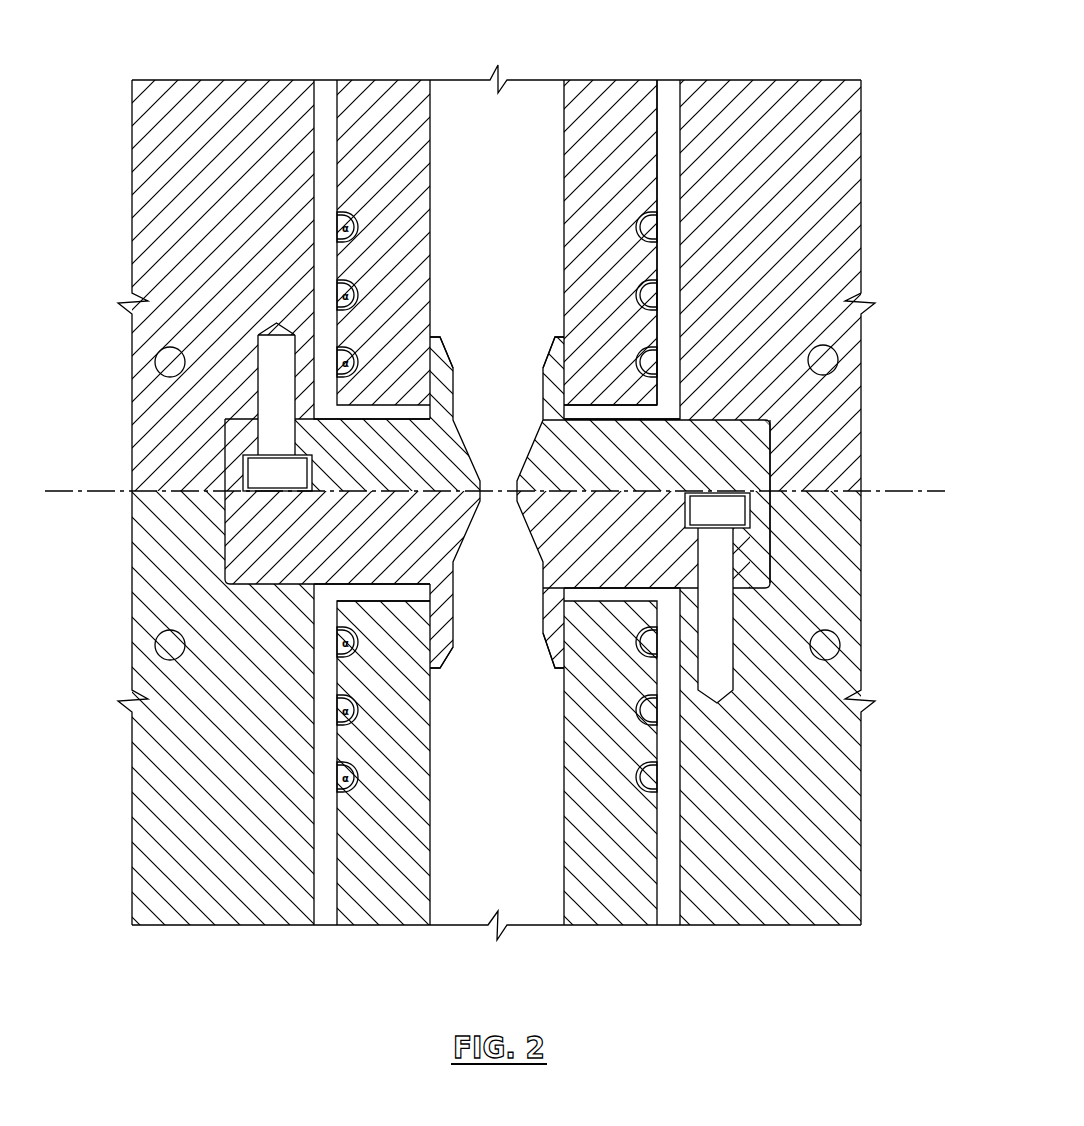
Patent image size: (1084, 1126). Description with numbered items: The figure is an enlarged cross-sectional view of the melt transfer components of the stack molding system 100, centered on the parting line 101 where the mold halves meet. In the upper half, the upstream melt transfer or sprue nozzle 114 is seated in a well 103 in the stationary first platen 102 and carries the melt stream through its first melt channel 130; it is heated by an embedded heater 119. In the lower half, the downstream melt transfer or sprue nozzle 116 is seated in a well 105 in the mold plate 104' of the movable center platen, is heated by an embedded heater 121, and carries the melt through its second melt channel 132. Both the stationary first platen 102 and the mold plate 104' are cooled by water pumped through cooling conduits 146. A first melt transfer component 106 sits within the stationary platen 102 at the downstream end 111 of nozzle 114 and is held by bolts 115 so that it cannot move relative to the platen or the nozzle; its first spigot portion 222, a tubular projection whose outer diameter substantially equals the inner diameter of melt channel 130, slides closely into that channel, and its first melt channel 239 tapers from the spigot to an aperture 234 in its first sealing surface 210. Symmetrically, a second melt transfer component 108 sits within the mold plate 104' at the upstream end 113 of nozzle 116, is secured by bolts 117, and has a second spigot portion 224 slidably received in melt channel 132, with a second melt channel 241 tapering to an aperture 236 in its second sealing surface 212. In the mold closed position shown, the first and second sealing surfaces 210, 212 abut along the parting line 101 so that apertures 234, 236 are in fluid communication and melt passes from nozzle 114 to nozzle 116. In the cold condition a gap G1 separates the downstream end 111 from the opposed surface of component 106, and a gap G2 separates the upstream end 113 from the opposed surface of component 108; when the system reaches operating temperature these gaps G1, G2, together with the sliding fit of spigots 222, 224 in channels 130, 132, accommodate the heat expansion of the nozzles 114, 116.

The stack molding system 100 is at (905, 110).
The parting line 101 is at (901, 489).
The stationary first platen 102 is at (832, 197).
The well 103 is at (669, 270).
The mold plate 104' is at (496, 715).
The well 105 is at (672, 822).
The first melt transfer component 106 is at (776, 446).
The second melt transfer component 108 is at (776, 530).
The downstream end 111 is at (333, 404).
The upstream end 113 is at (342, 600).
The upstream melt transfer nozzle 114 is at (672, 140).
The bolts 115 is at (238, 468).
The downstream melt transfer nozzle 116 is at (676, 867).
The bolts 117 is at (722, 622).
The embedded heater 119 is at (655, 224).
The embedded heater 121 is at (658, 742).
The first melt channel 130 is at (561, 318).
The second melt channel 132 is at (440, 750).
The cooling conduits 146 is at (170, 362).
The first sealing surface 210 is at (320, 494).
The second sealing surface 212 is at (648, 487).
The first spigot portion 222 is at (556, 370).
The second spigot portion 224 is at (553, 633).
The aperture 234 is at (482, 447).
The aperture 236 is at (482, 517).
The first melt channel 239 is at (456, 397).
The second melt channel 241 is at (456, 585).
The gap G1 is at (607, 424).
The gap G2 is at (375, 606).